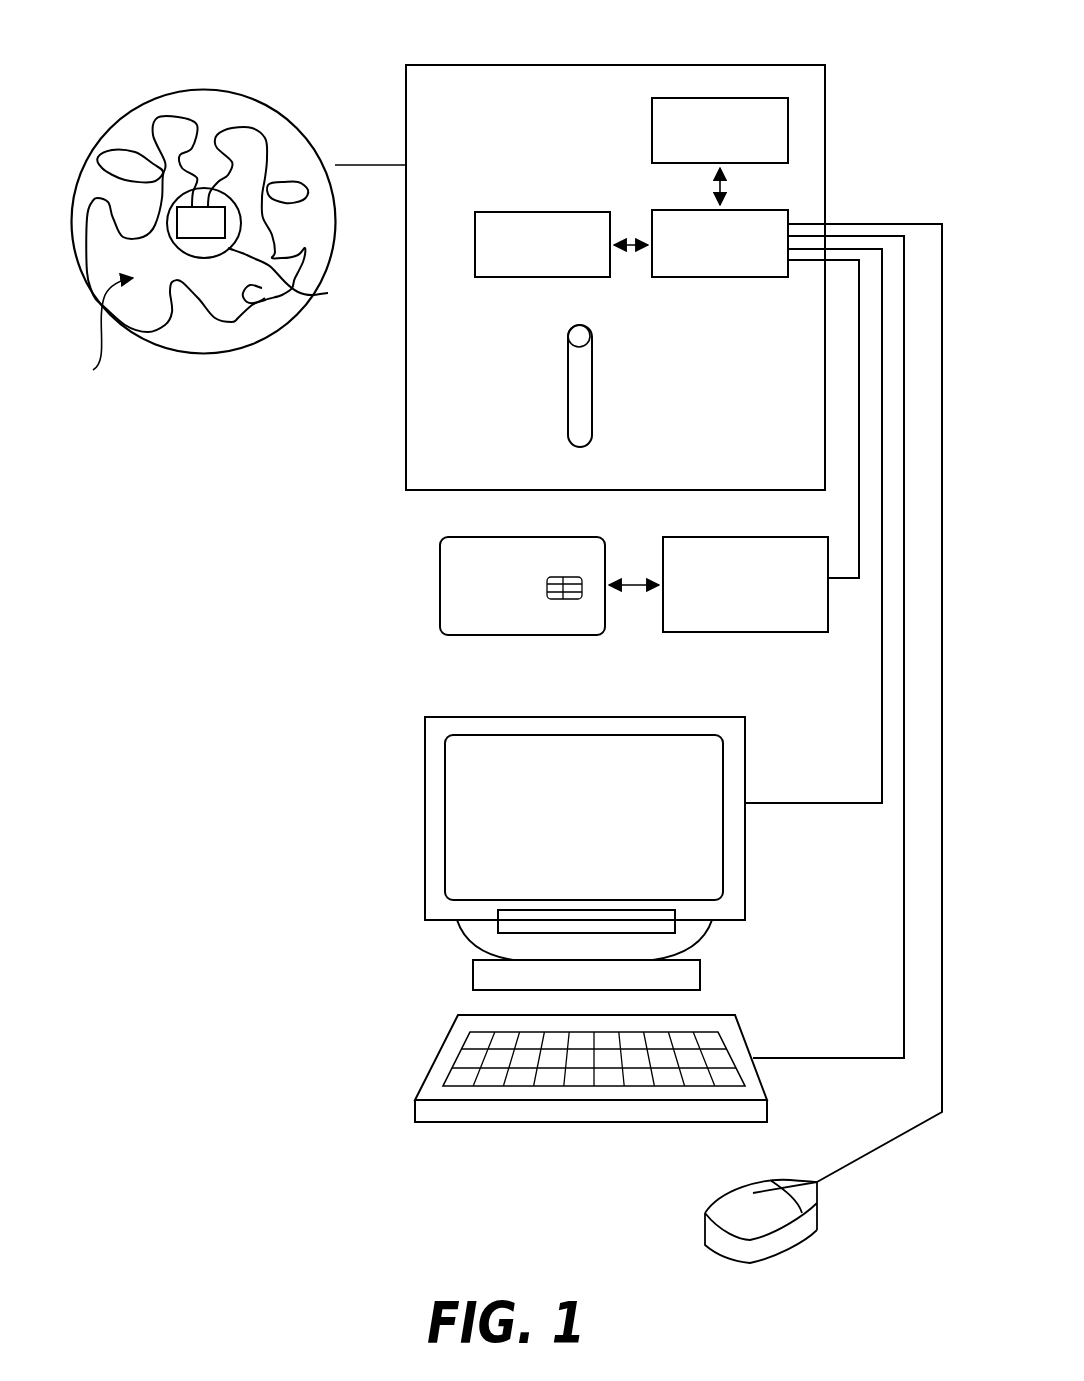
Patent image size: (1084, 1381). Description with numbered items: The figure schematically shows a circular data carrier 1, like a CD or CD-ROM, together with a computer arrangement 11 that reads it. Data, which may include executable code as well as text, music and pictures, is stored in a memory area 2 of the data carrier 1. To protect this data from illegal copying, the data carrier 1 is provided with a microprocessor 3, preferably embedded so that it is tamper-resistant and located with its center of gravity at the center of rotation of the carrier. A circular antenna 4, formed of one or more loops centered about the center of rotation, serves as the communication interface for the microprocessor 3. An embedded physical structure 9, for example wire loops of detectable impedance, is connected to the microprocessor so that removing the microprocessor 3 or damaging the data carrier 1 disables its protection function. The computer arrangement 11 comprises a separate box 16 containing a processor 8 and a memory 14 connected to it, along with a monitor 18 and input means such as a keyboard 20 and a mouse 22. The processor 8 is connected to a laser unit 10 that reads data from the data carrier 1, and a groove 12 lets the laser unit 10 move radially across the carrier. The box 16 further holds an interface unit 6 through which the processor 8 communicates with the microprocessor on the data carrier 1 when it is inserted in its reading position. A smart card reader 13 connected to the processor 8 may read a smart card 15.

The data carrier 1 is at (209, 217).
The memory area 2 is at (243, 117).
The microprocessor 3 is at (100, 333).
The circular antenna 4 is at (338, 292).
The embedded physical structure 9 is at (237, 322).
The box 16 is at (593, 65).
The memory 14 is at (668, 128).
The processor 8 is at (710, 262).
The interface unit 6 is at (597, 230).
The laser unit 10 is at (568, 337).
The groove 12 is at (580, 422).
The computer arrangement 11 is at (551, 624).
The smart card 15 is at (463, 572).
The smart card reader 13 is at (803, 607).
The monitor 18 is at (483, 828).
The keyboard 20 is at (458, 1050).
The mouse 22 is at (728, 1213).